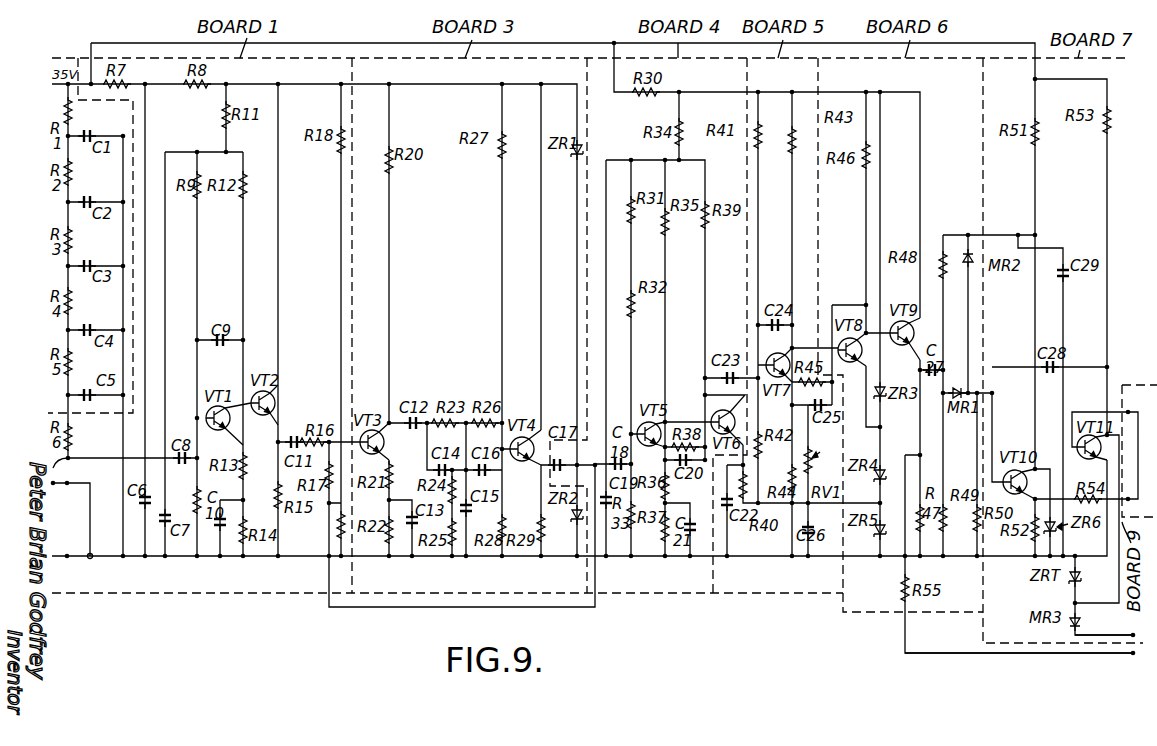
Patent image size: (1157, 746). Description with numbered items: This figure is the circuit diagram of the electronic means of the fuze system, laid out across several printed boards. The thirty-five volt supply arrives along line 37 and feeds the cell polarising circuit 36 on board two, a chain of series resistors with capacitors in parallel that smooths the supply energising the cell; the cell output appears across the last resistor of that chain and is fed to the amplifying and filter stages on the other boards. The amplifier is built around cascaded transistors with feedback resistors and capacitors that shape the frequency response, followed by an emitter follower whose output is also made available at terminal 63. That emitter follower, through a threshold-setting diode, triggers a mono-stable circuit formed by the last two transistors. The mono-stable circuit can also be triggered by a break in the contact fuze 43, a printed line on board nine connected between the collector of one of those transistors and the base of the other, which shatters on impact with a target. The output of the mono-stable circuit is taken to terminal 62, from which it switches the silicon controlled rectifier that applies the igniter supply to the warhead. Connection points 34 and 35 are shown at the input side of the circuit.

The input terminal 34 is at (70, 518).
The input terminal 35 is at (122, 467).
The cell polarising circuit 36 is at (133, 133).
The supply line 37 is at (60, 108).
The contact fuze 43 is at (1120, 396).
The terminal 62 is at (1133, 635).
The terminal 63 is at (1133, 653).